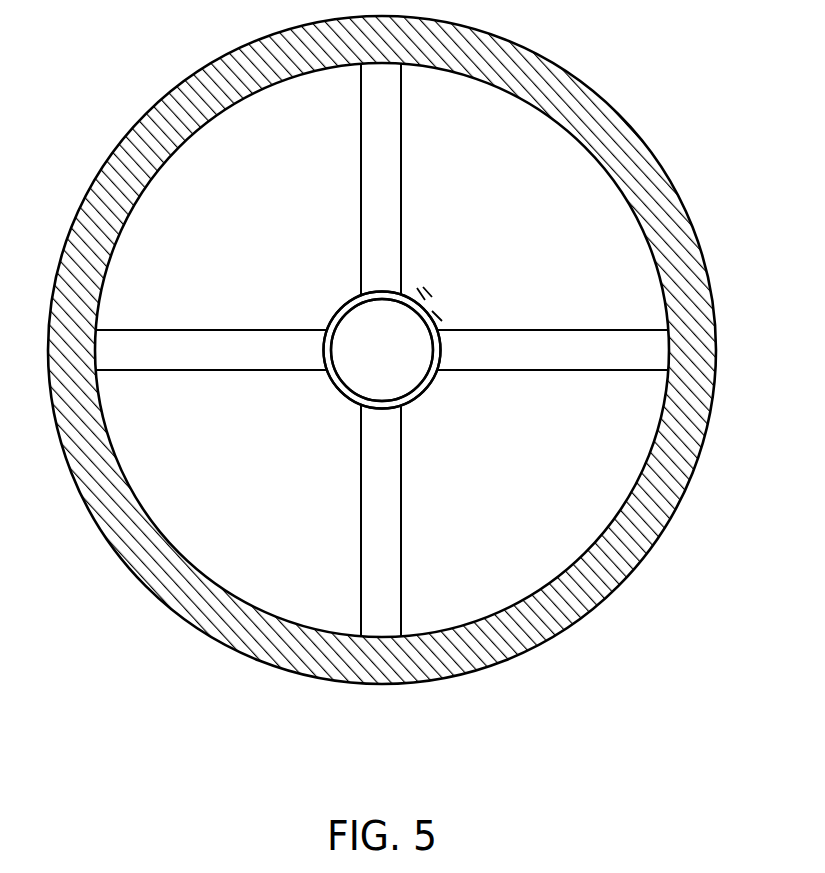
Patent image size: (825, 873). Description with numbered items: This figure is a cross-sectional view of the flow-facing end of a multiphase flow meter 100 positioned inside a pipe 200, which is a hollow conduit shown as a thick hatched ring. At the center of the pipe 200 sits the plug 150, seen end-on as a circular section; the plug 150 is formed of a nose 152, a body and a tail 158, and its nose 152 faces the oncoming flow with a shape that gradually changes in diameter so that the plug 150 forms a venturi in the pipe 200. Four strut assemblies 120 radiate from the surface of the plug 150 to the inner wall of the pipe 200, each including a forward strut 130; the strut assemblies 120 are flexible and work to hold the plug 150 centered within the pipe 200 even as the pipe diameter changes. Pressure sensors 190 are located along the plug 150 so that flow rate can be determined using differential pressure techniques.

The multiphase flow meter 100 is at (382, 350).
The strut assembly 120 is at (410, 124).
The forward strut 130 is at (403, 170).
The plug 150 is at (322, 284).
The nose 152 is at (427, 390).
The tail 158 is at (331, 392).
The pressure sensor 190 is at (428, 297).
The pipe 200 is at (690, 216).